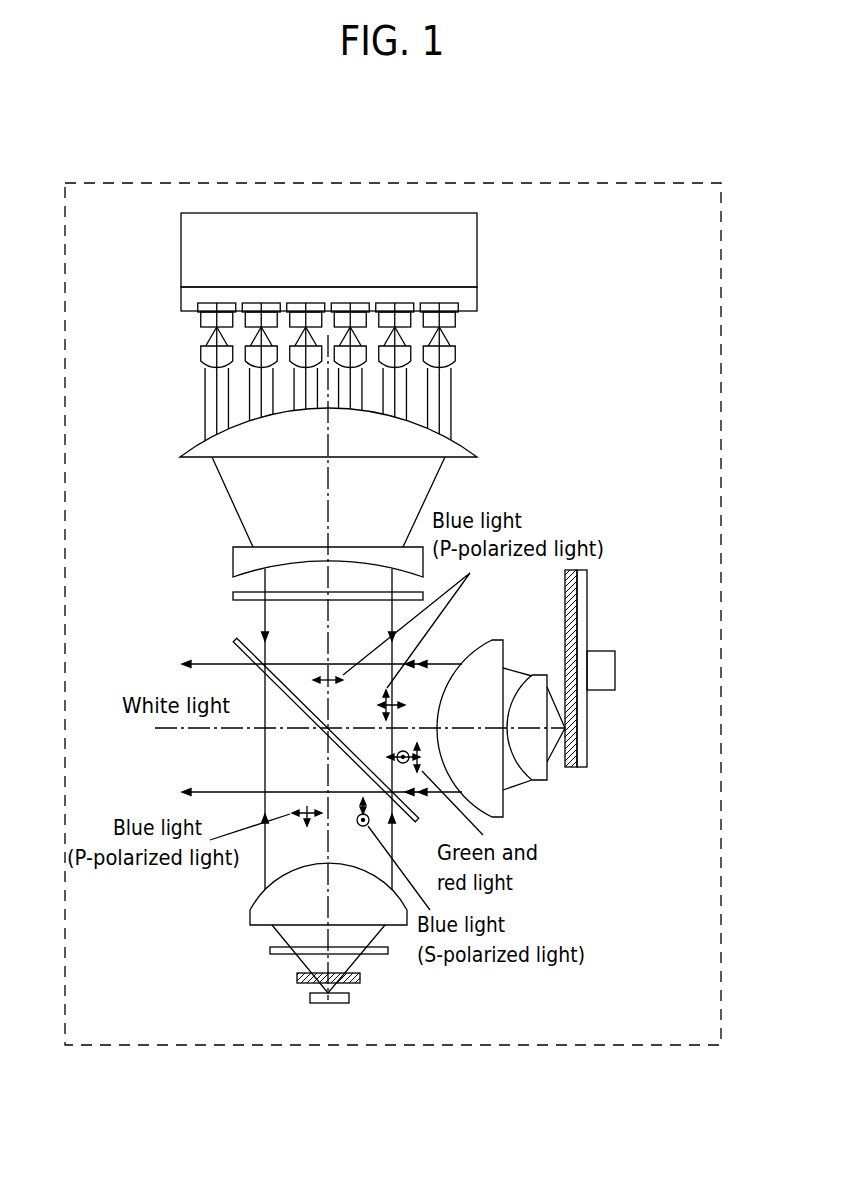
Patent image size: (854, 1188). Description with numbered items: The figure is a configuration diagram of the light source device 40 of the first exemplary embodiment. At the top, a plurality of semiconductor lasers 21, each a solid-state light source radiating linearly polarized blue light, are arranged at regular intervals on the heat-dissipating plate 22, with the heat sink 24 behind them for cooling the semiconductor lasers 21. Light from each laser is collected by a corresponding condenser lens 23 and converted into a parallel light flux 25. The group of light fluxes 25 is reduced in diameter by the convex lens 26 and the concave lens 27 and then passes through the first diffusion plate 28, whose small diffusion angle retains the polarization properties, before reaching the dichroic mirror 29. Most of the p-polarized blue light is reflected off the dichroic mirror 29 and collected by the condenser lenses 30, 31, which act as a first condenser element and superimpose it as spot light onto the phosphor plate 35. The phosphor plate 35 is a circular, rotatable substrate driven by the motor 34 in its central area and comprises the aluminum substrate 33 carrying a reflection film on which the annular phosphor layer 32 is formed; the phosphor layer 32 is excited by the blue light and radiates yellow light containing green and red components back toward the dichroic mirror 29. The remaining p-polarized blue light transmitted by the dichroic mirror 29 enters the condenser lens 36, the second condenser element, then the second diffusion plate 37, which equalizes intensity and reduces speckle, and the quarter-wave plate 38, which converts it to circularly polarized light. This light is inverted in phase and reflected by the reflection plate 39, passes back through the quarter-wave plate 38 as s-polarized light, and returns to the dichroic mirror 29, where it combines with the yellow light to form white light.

The semiconductor laser 21 is at (457, 320).
The heat-dissipating plate 22 is at (477, 305).
The condenser lens 23 is at (457, 353).
The heat sink 24 is at (477, 253).
The light flux 25 is at (205, 412).
The lens 26 is at (180, 453).
The lens 27 is at (233, 560).
The first diffusion plate 28 is at (233, 595).
The dichroic mirror 29 is at (233, 642).
The condenser lens 30 is at (498, 640).
The condenser lens 31 is at (538, 675).
The phosphor layer 32 is at (572, 767).
The aluminum substrate 33 is at (587, 755).
The motor 34 is at (622, 688).
The phosphor plate 35 is at (636, 703).
The condenser lens 36 is at (260, 900).
The second diffusion plate 37 is at (268, 948).
The quarter-wave plate 38 is at (297, 978).
The reflection plate 39 is at (310, 997).
The light source device 40 is at (721, 498).